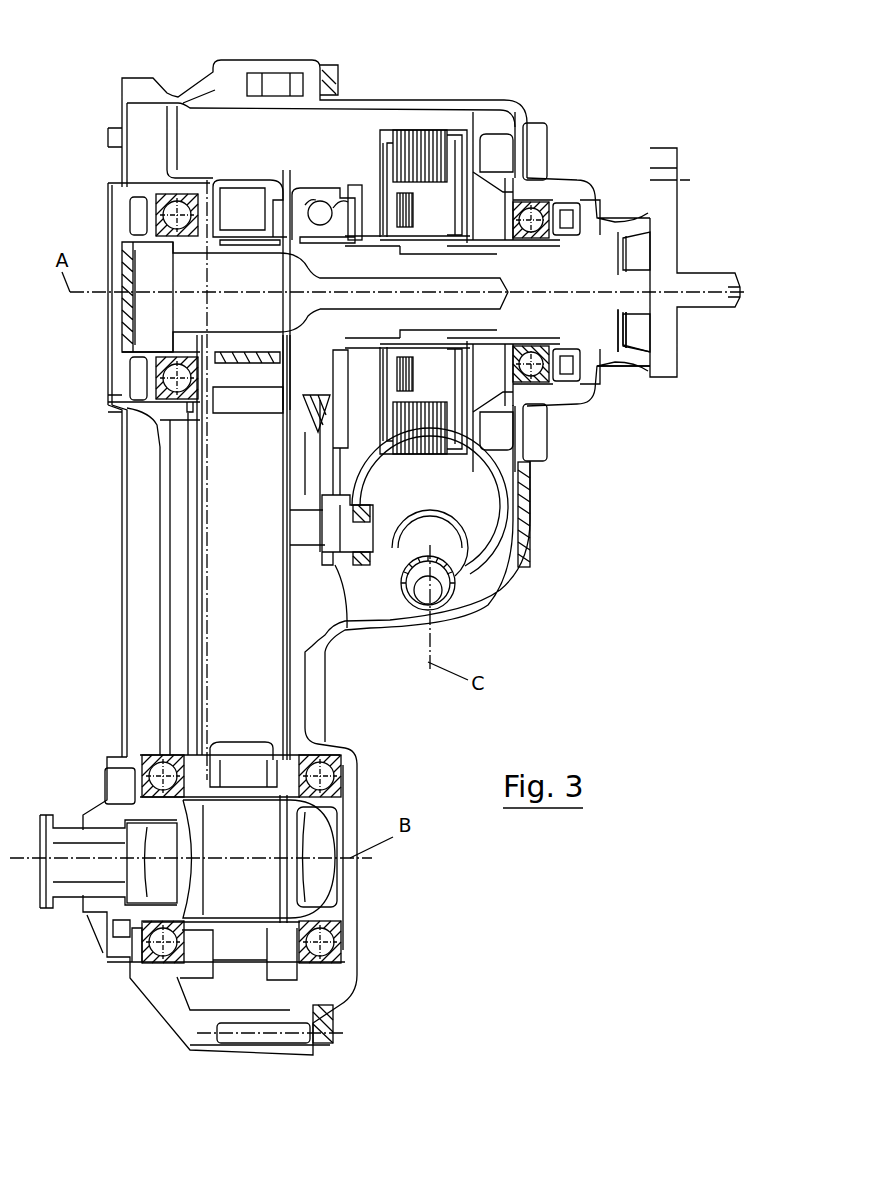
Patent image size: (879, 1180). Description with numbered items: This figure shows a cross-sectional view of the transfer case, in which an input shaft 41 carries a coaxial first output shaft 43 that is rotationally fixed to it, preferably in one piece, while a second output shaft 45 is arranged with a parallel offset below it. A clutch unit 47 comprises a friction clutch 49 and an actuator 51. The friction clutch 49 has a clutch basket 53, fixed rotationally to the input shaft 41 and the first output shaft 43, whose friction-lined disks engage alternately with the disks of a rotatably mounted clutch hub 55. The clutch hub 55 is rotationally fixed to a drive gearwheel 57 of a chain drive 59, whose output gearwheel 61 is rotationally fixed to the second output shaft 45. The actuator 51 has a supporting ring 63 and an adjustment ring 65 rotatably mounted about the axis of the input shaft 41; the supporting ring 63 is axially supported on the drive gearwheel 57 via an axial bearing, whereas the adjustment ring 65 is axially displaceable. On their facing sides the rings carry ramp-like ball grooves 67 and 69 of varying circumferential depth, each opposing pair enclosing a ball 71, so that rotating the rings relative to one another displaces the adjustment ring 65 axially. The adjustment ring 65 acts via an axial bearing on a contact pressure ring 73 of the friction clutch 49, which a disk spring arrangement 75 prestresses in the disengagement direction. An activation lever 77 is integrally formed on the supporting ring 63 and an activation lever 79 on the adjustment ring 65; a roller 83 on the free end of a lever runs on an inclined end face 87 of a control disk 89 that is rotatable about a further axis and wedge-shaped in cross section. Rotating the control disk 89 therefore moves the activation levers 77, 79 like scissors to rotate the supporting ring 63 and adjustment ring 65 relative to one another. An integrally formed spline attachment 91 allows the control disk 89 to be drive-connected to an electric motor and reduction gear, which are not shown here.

The input shaft 41 is at (140, 347).
The first output shaft 43 is at (705, 282).
The second output shaft 45 is at (65, 902).
The clutch unit 47 is at (373, 133).
The friction clutch 49 is at (417, 100).
The actuator 51 is at (405, 652).
The clutch basket 53 is at (450, 128).
The clutch hub 55 is at (440, 225).
The drive gearwheel 57 is at (238, 197).
The chain drive 59 is at (193, 527).
The output gearwheel 61 is at (230, 953).
The supporting ring 63 is at (307, 200).
The adjustment ring 65 is at (354, 200).
The ball groove 67 is at (313, 197).
The ball groove 69 is at (346, 200).
The ball 71 is at (322, 205).
The contact pressure ring 73 is at (383, 147).
The disk spring arrangement 75 is at (400, 247).
The activation lever 77 is at (313, 418).
The activation lever 79 is at (333, 471).
The roller 83 is at (353, 565).
The end face 87 is at (482, 547).
The control disk 89 is at (492, 467).
The spline attachment 91 is at (440, 588).